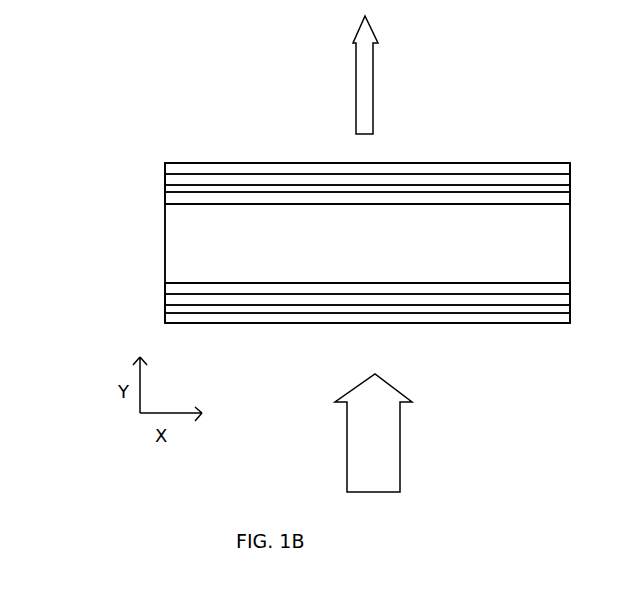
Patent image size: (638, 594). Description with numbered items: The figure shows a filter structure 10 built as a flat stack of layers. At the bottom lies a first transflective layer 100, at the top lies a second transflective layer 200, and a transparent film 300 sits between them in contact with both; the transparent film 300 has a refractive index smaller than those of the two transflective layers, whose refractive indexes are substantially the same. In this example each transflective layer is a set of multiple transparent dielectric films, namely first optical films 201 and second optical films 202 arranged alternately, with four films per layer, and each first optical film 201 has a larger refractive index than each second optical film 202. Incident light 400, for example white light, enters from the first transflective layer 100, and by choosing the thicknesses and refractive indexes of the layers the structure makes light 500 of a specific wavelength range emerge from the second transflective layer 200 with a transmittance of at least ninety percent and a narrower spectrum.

The filter structure 10 is at (504, 127).
The first transflective layer 100 is at (85, 242).
The second transflective layer 200 is at (85, 123).
The transparent film 300 is at (190, 241).
The incident light 400 is at (369, 443).
The light of a specific wavelength range 500 is at (365, 92).
The first optical film 201 is at (188, 178).
The second optical film 202 is at (187, 167).